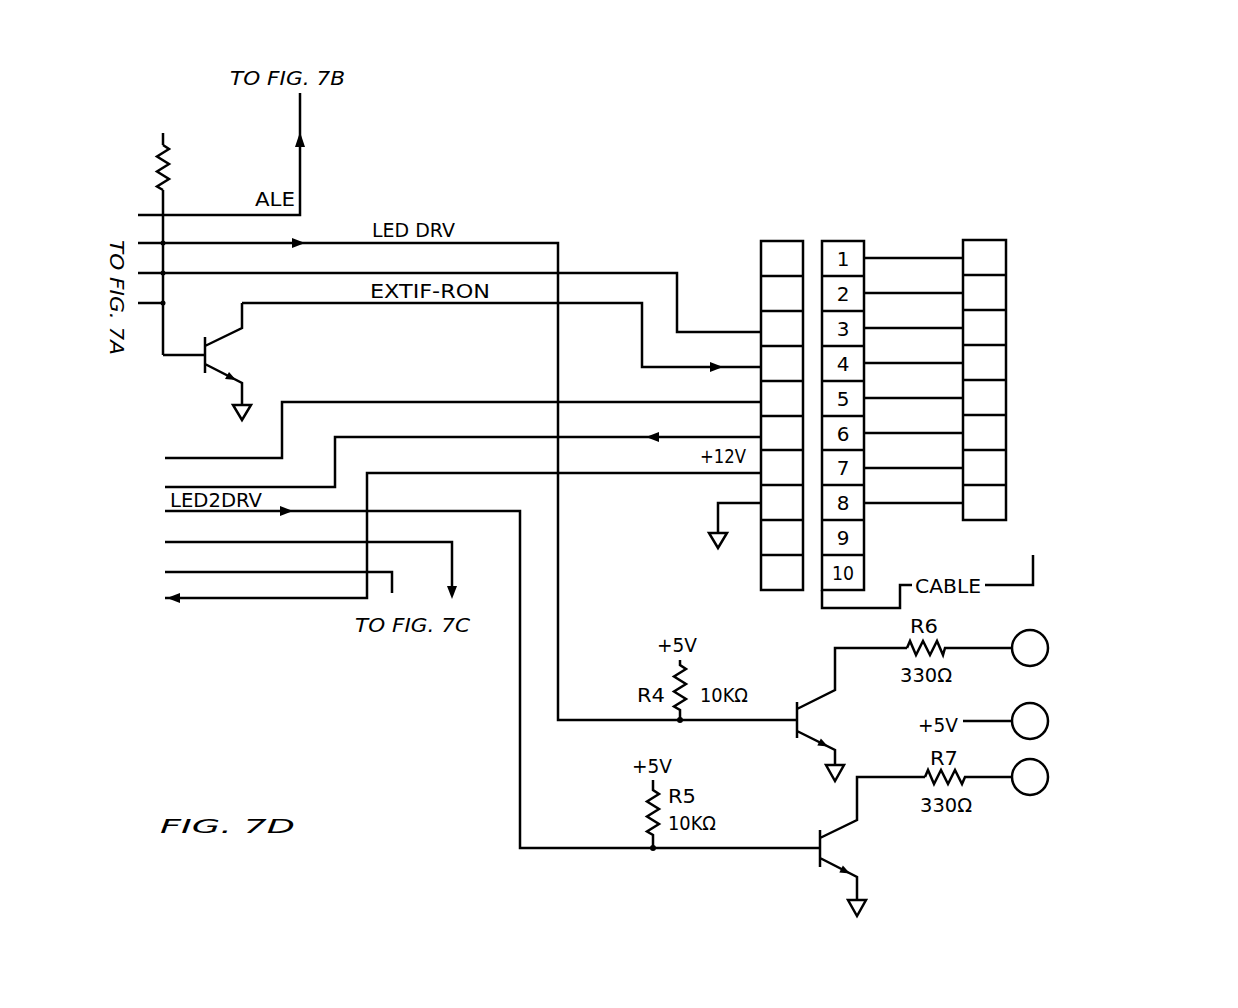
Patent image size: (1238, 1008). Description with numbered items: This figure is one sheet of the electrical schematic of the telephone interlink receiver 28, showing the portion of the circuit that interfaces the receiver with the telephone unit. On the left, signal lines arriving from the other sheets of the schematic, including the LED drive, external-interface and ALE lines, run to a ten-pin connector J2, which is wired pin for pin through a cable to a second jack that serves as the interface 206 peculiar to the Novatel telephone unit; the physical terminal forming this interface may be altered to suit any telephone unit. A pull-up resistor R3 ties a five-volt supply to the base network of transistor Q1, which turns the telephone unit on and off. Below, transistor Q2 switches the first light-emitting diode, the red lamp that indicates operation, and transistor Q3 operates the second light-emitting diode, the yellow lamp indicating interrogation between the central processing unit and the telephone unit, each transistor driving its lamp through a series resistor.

The interface 206 is at (1012, 287).
The receiver 28 is at (1127, 590).
The connector J2 is at (782, 401).
The transistor Q1 is at (234, 361).
The transistor Q2 is at (855, 714).
The transistor Q3 is at (878, 846).
The resistor R3 is at (181, 232).